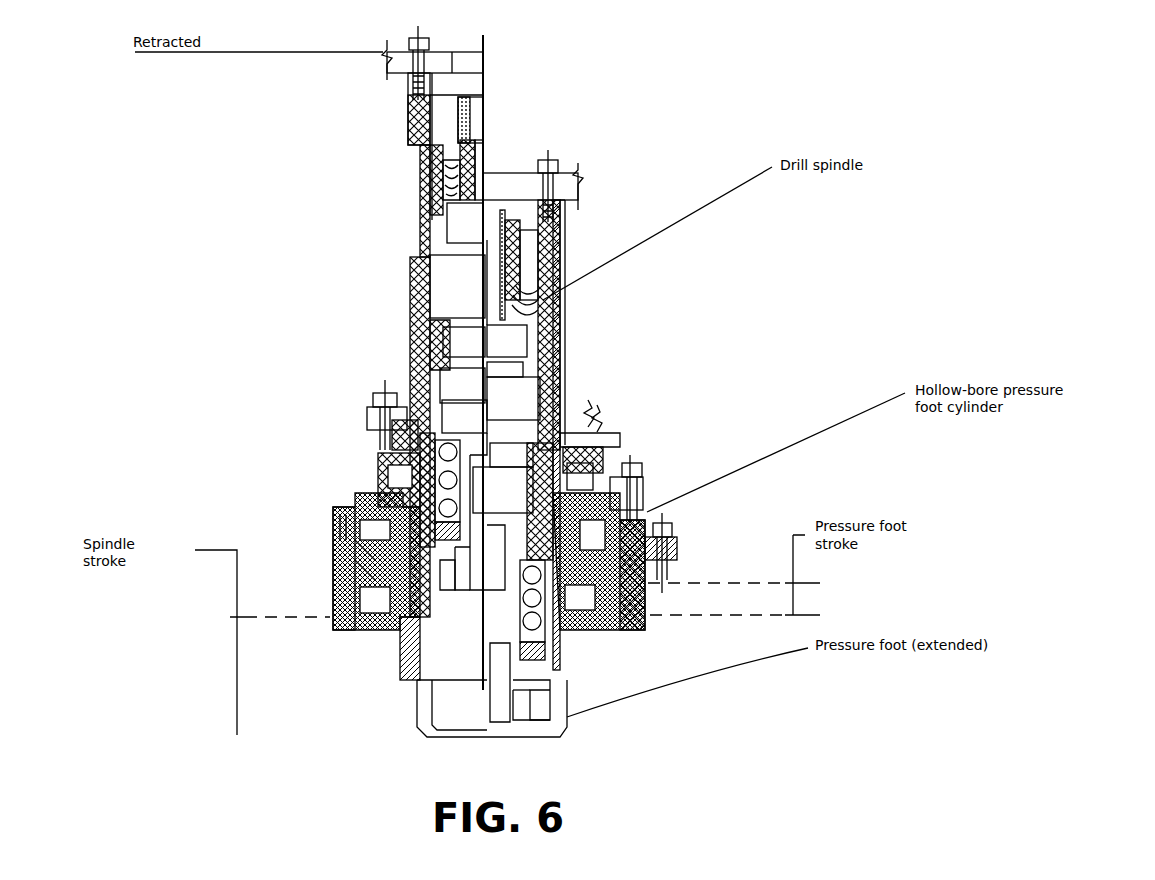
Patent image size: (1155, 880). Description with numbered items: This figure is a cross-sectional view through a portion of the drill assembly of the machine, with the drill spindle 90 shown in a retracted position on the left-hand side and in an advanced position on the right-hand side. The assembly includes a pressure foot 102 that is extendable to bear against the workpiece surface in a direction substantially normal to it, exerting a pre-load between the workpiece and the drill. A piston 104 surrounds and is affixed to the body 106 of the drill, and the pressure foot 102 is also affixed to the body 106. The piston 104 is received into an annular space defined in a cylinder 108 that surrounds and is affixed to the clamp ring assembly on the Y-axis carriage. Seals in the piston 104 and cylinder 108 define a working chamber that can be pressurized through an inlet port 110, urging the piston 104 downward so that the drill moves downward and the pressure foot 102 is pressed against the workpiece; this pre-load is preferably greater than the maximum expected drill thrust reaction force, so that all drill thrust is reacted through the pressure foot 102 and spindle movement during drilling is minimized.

The drill spindle 90 is at (490, 140).
The pressure foot 102 is at (420, 707).
The piston 104 is at (377, 470).
The body 106 is at (410, 335).
The cylinder 108 is at (333, 587).
The inlet port 110 is at (341, 493).